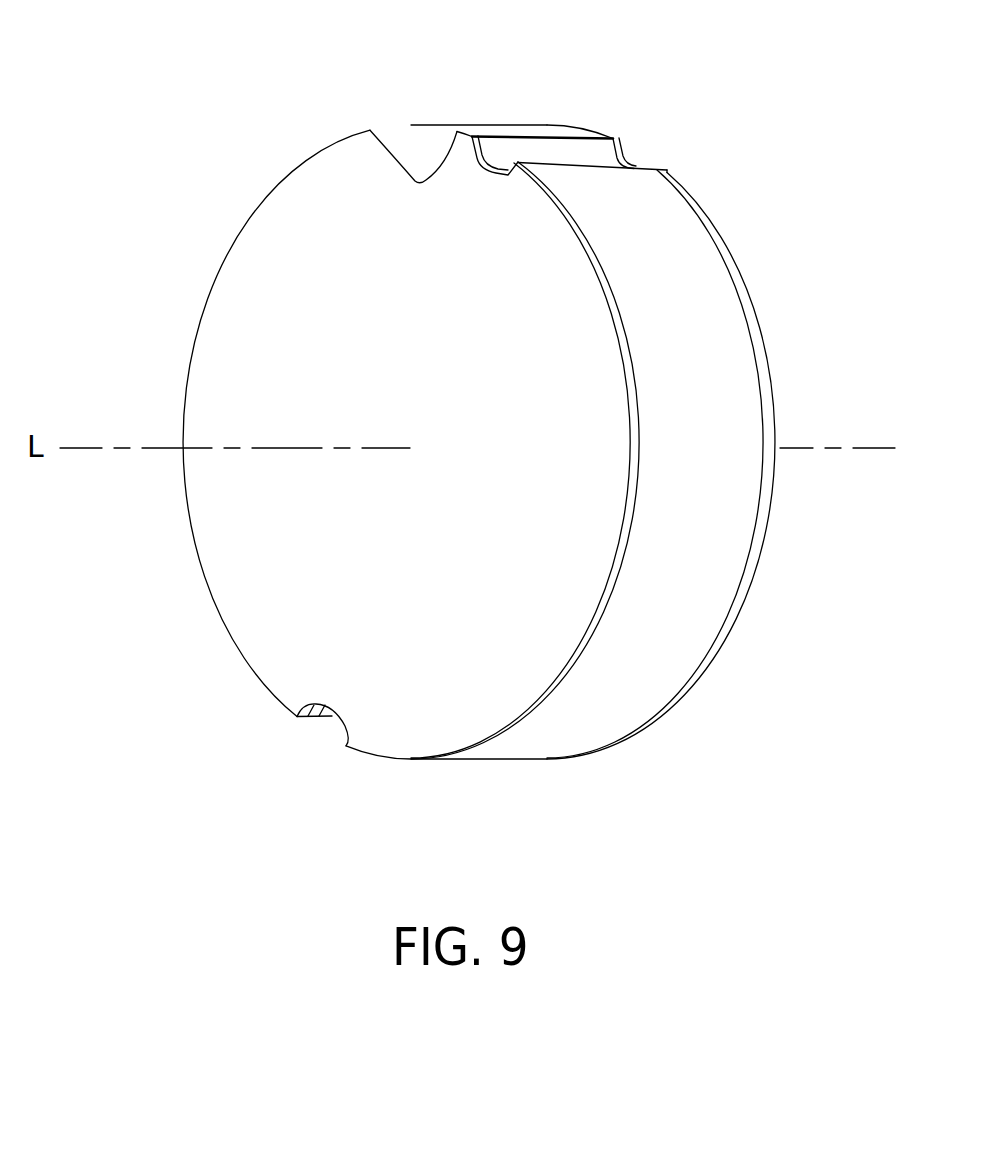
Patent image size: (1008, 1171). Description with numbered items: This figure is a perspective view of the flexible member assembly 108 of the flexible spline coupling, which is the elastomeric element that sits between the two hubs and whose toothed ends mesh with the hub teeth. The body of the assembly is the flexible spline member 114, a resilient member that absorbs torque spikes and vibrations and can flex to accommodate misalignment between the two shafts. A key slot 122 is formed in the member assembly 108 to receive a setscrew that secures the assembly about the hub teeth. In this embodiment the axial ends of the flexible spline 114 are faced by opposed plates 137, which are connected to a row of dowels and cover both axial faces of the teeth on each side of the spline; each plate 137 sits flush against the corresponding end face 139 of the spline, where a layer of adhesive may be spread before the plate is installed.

The flexible member assembly 108 is at (479, 420).
The flexible spline member 114 is at (714, 599).
The key slot 122 is at (640, 150).
The plate 137 is at (369, 128).
The end face 139 is at (752, 313).